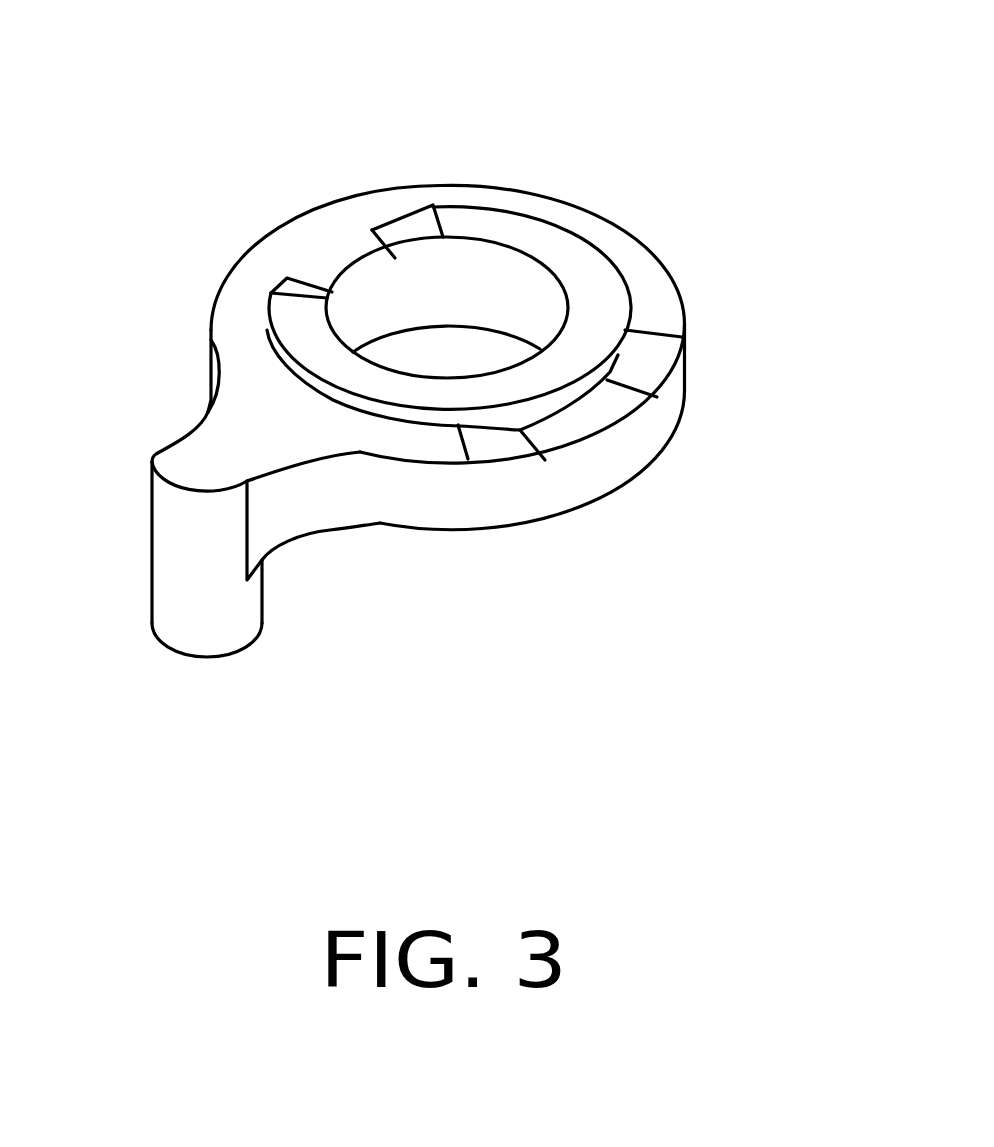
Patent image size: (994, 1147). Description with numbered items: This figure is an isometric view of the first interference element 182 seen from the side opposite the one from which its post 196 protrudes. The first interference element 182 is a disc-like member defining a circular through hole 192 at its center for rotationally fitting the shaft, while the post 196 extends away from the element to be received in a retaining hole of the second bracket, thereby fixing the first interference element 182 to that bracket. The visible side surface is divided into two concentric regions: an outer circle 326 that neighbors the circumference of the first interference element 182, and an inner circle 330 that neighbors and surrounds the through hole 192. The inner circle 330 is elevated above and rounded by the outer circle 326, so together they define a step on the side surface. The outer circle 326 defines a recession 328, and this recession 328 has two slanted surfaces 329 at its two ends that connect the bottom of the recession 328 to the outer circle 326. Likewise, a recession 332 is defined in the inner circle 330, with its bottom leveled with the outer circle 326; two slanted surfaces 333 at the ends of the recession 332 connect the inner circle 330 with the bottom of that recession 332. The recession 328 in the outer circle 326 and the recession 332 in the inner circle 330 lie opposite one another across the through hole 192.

The first interference element 182 is at (692, 232).
The circular through hole 192 is at (507, 293).
The post 196 is at (240, 610).
The outer circle 326 is at (240, 310).
The recession 328 is at (602, 408).
The slanted surfaces 329 is at (647, 356).
The inner circle 330 is at (592, 308).
The recession 332 is at (352, 257).
The slanted surfaces 333 is at (410, 232).